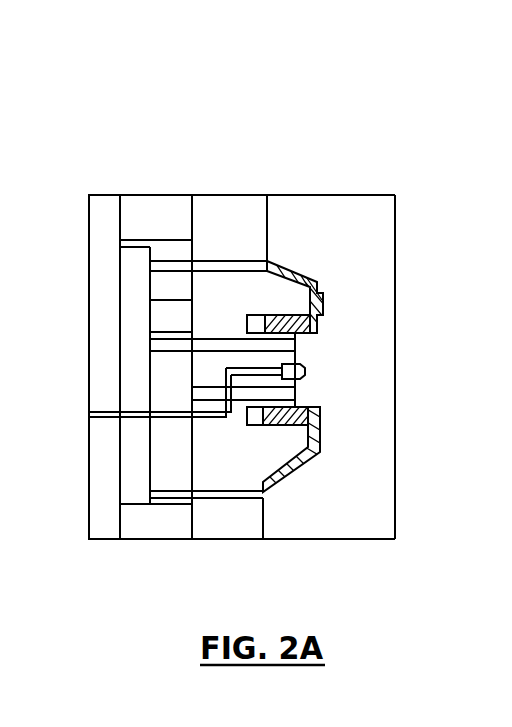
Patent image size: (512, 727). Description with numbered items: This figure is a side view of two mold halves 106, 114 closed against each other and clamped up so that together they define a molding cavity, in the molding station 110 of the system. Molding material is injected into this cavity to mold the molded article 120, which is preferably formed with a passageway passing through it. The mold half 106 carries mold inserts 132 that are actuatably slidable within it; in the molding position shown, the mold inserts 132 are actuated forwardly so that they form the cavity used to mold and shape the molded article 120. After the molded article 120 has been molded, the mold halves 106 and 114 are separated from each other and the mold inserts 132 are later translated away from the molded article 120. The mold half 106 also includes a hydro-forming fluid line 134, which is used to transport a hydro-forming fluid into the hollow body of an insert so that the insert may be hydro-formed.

The molding station 110 is at (240, 146).
The mold half 106 is at (224, 517).
The mold half 114 is at (368, 493).
The molded article 120 is at (296, 275).
The mold inserts 132 is at (313, 413).
The hydro-forming fluid line 134 is at (228, 368).